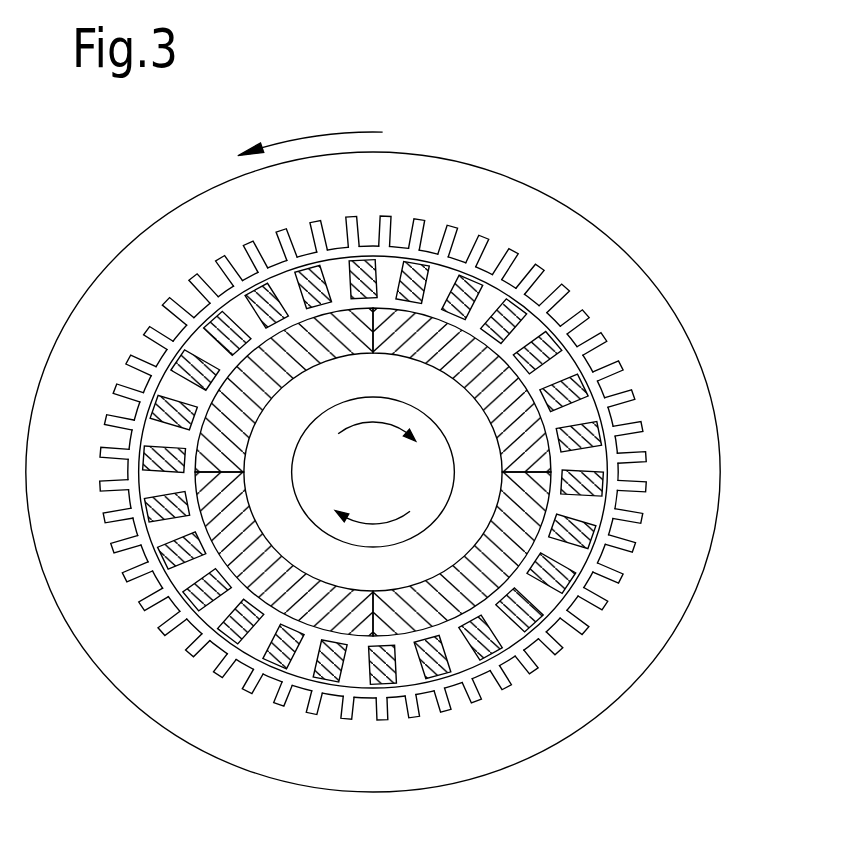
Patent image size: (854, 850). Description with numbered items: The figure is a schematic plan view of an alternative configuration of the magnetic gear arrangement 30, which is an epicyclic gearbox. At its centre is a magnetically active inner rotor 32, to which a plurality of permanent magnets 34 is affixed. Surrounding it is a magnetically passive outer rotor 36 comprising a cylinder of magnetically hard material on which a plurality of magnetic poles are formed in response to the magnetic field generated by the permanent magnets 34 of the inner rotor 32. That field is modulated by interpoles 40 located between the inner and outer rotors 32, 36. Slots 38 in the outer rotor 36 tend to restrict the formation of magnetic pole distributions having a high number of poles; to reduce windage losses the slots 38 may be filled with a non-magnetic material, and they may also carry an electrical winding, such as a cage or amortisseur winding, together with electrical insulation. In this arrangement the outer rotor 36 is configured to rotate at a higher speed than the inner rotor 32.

The gear arrangement 30 is at (498, 160).
The inner rotor 32 is at (520, 372).
The permanent magnets 34 is at (522, 525).
The outer rotor 36 is at (148, 662).
The slots 38 is at (113, 390).
The interpoles 40 is at (465, 425).